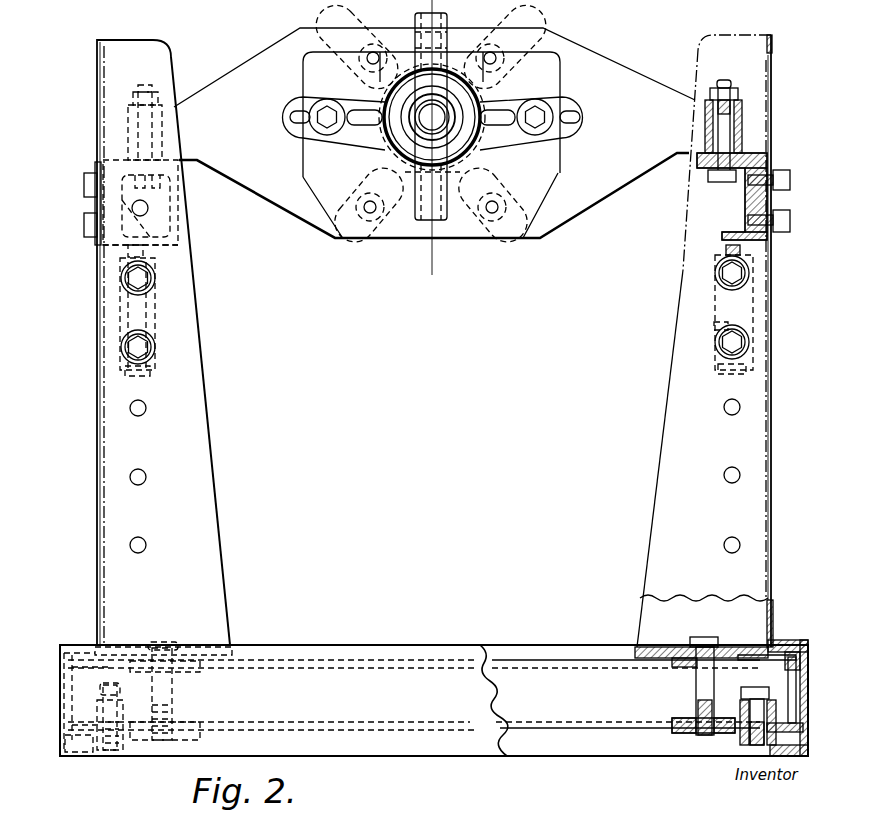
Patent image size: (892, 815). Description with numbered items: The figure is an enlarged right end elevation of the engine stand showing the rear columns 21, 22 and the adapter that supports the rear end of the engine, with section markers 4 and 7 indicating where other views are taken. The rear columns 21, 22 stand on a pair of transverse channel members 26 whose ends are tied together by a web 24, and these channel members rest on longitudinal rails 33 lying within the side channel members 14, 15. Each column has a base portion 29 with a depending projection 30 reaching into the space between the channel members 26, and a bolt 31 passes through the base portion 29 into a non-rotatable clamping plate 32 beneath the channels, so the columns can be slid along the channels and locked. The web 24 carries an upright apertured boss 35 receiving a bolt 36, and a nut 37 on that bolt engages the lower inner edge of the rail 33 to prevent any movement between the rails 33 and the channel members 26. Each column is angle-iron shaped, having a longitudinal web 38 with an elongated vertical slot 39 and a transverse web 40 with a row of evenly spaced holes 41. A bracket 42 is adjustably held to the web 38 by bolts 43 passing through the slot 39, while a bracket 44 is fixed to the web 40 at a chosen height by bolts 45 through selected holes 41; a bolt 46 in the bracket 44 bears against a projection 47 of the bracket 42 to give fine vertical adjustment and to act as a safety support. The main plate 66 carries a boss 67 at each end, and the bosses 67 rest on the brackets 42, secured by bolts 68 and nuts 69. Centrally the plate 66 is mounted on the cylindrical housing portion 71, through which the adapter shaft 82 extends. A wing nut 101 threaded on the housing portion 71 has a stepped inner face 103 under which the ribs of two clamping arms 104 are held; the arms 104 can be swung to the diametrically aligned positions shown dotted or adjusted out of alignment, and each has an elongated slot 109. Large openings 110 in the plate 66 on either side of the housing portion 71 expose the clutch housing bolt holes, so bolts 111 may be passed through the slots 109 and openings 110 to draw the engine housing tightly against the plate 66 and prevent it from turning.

The section line 4- 4 is at (432, 275).
The section line 7- 7 is at (283, 118).
The side channel member 14 is at (78, 645).
The side channel member 15 is at (790, 642).
The rear column 21 is at (97, 463).
The rear column 22 is at (773, 444).
The web 24 is at (95, 667).
The channel member 26 is at (586, 718).
The base portion 29 is at (215, 647).
The depending projection 30 is at (200, 668).
The bolt 31 is at (165, 641).
The clamping plate 32 is at (200, 737).
The rail 33 is at (80, 755).
The upright apertured boss 35 is at (120, 708).
The bolt 36 is at (100, 692).
The nut 37 is at (122, 752).
The longitudinally extending web 38 is at (97, 46).
The elongated vertical slot 39 is at (100, 68).
The transversely extending web 40 is at (208, 486).
The holes 41 is at (140, 540).
The bracket 42 is at (178, 180).
The bolts 43 is at (84, 185).
The bracket 44 is at (157, 318).
The bolts 45 is at (125, 278).
The bolt 46 is at (128, 255).
The projection 47 is at (150, 242).
The main plate 66 is at (628, 72).
The boss 67 is at (128, 128).
The bolts 68 is at (148, 85).
The nuts 69 is at (160, 100).
The housing portion 71 is at (395, 127).
The adapter shaft 82 is at (448, 120).
The wing nut 101 is at (425, 215).
The stepped inner face 103 is at (358, 92).
The clamping arms 104 is at (300, 110).
The elongated slot 109 is at (297, 123).
The openings 110 is at (318, 185).
The bolts 111 is at (327, 128).